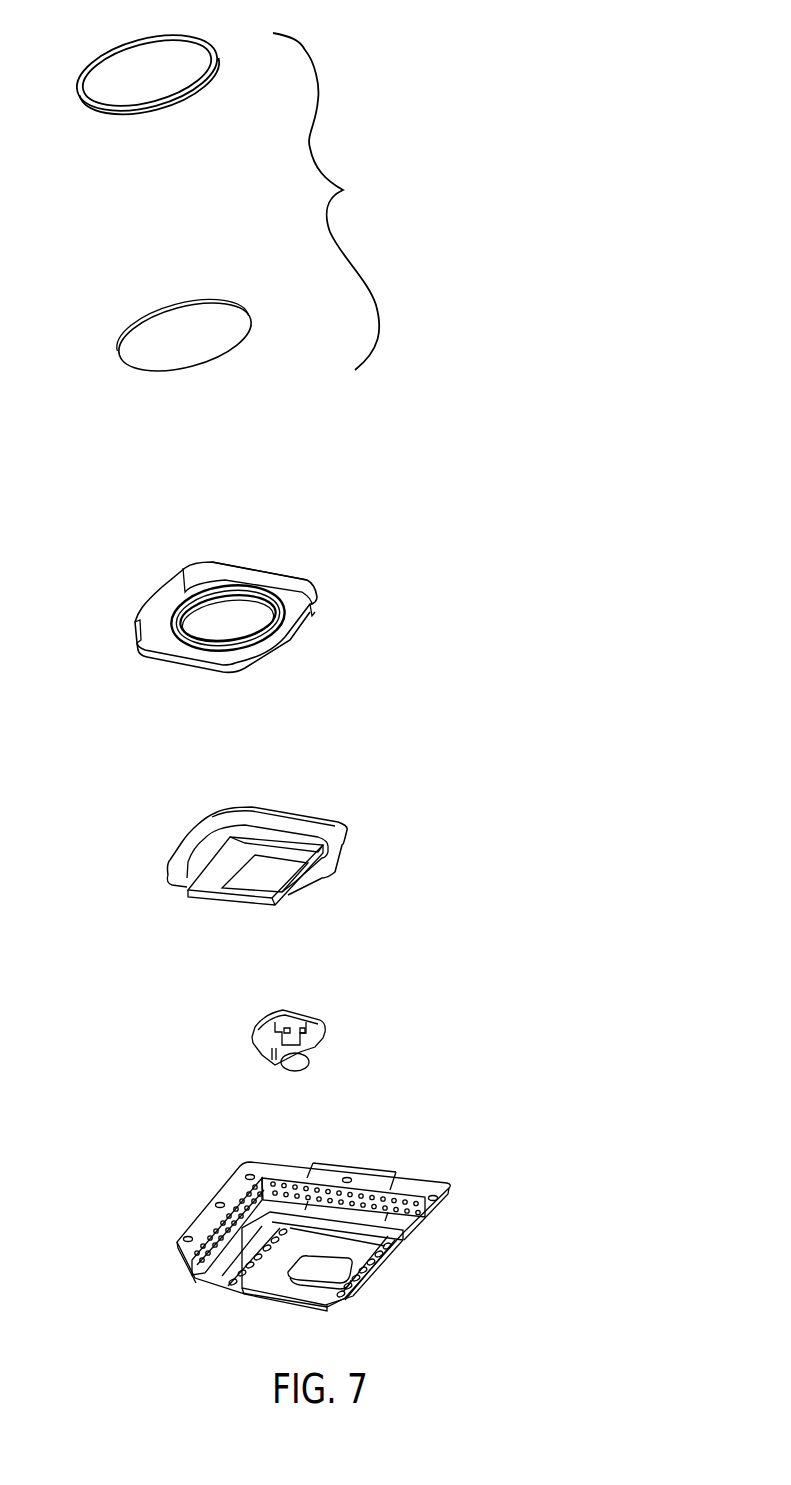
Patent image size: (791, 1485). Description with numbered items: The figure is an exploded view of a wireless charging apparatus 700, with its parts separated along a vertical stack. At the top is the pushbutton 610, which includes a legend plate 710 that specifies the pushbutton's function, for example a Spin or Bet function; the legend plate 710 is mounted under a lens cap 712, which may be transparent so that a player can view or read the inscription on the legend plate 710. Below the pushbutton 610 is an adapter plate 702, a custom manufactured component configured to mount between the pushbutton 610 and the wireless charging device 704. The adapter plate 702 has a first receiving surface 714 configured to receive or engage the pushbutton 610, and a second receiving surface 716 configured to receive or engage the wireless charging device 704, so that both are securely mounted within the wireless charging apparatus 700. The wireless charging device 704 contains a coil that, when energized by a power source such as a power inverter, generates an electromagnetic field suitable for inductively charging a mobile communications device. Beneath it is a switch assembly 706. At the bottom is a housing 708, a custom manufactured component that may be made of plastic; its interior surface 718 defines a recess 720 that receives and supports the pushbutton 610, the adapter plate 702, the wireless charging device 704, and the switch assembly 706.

The wireless charging apparatus 700 is at (546, 104).
The pushbutton 610 is at (331, 201).
The lens cap 712 is at (214, 86).
The legend plate 710 is at (247, 316).
The adapter plate 702 is at (317, 582).
The first receiving surface 714 is at (254, 555).
The second receiving surface 716 is at (230, 635).
The wireless charging device 704 is at (343, 824).
The switch assembly 706 is at (325, 1018).
The housing 708 is at (437, 1180).
The interior surface 718 is at (317, 1152).
The recess 720 is at (371, 1156).